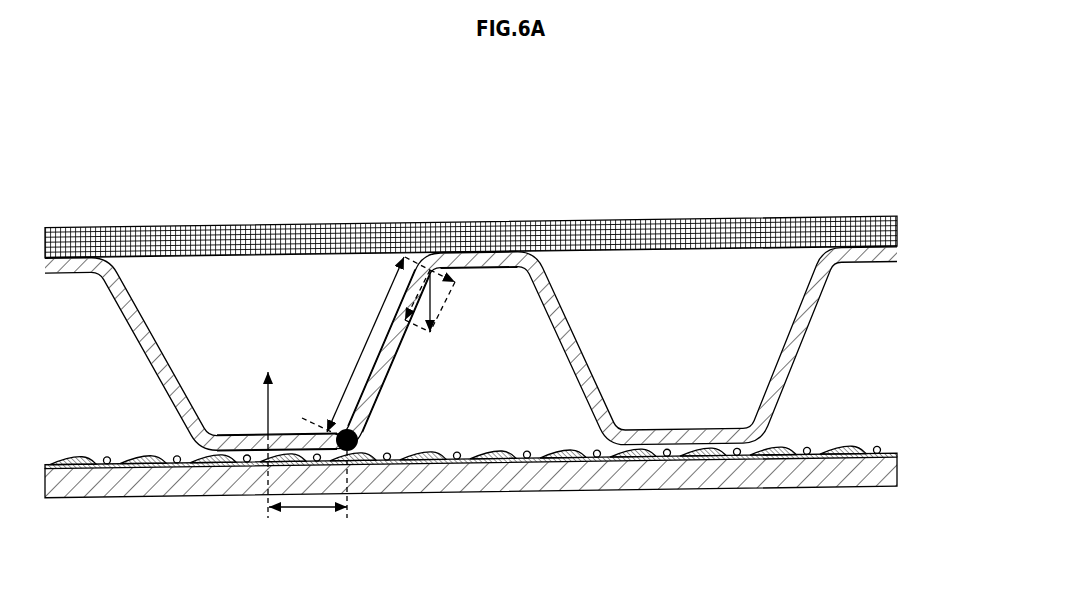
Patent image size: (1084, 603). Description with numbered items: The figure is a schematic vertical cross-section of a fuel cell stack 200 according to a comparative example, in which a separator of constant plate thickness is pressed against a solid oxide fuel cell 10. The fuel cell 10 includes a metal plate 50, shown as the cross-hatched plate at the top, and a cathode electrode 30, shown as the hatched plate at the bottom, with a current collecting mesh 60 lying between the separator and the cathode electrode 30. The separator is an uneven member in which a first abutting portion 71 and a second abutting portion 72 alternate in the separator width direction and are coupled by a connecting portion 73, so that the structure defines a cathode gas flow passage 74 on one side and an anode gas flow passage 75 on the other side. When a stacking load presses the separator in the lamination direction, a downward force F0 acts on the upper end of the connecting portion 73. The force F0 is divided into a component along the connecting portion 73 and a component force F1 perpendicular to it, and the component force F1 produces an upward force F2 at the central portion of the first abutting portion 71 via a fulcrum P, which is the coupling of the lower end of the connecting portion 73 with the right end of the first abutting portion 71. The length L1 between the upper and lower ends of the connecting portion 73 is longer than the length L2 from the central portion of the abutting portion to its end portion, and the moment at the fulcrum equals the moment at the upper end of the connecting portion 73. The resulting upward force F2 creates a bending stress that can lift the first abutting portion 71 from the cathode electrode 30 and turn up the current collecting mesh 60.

The fuel cell stack 200 is at (875, 138).
The solid oxide fuel cell 10 is at (781, 205).
The metal plate 50 is at (897, 228).
The cathode electrode 30 is at (893, 473).
The current collecting mesh 60 is at (897, 452).
The first abutting portion 71 is at (216, 452).
The second abutting portion 72 is at (477, 258).
The connecting portion 73 is at (390, 357).
The cathode gas flow passage 74 is at (489, 392).
The anode gas flow passage 75 is at (697, 337).
The fulcrum P is at (352, 452).
The length between upper and lower ends of the connecting portion L1 is at (366, 346).
The length from the central portion to the end portion of the abutting portion L2 is at (308, 494).
The downward force F0 is at (432, 304).
The component force in a vertical direction to the connecting portion F1 is at (439, 268).
The upward force F2 is at (268, 433).